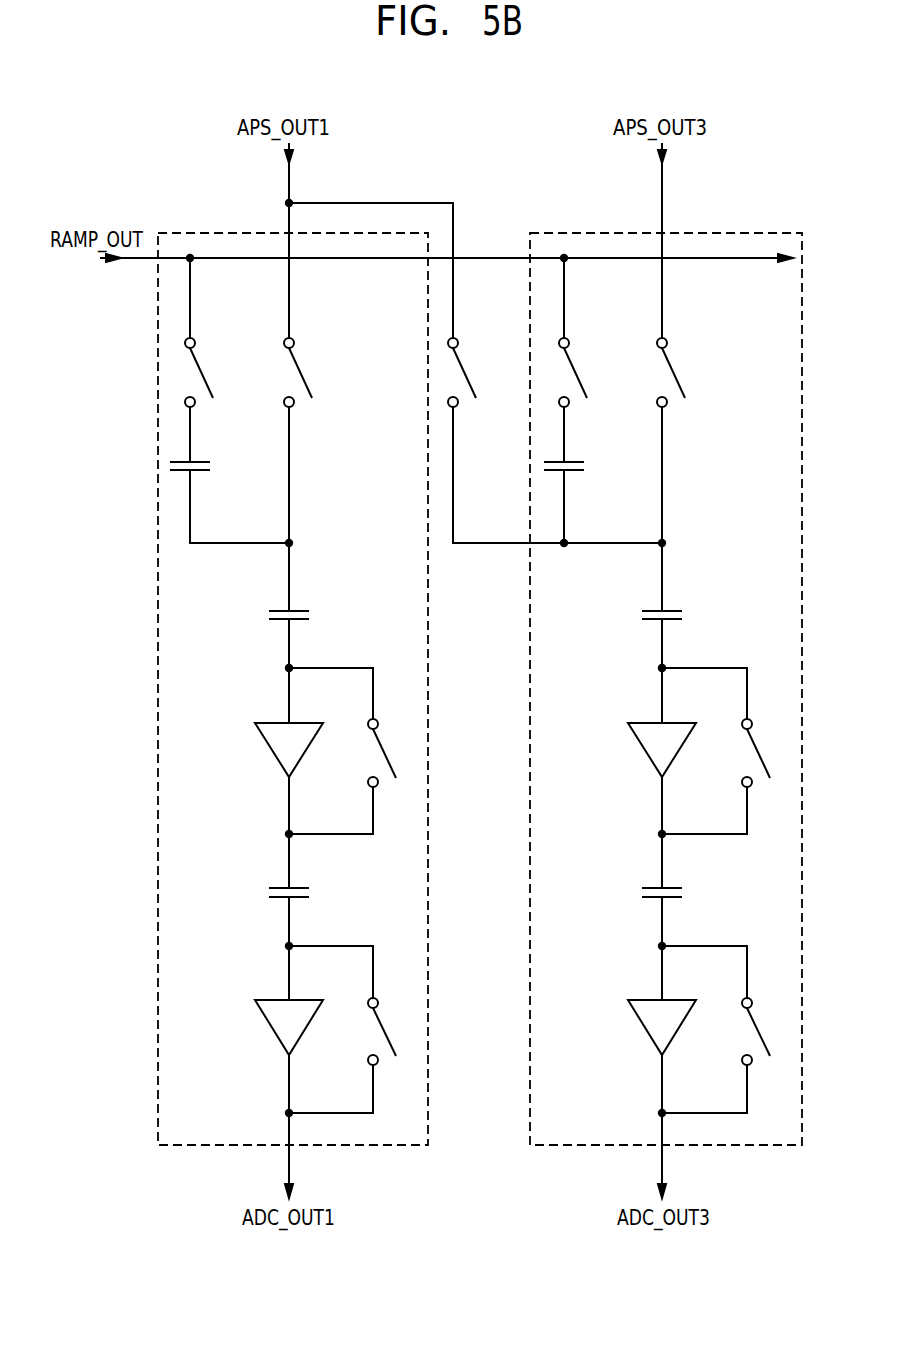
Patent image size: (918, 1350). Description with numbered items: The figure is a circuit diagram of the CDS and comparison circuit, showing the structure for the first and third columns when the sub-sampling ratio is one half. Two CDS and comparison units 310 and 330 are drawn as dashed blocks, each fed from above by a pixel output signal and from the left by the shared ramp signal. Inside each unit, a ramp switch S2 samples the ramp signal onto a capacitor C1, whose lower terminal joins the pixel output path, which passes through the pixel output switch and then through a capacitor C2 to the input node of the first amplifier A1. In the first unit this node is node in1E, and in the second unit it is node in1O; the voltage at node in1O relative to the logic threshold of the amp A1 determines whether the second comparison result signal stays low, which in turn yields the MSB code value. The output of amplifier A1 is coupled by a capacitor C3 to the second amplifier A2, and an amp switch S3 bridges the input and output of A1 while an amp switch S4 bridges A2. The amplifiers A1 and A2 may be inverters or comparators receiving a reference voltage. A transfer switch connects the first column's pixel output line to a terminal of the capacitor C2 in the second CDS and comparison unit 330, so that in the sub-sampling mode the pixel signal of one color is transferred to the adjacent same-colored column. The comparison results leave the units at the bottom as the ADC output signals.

The first CDS and comparison unit 310 is at (158, 706).
The second CDS and comparison unit 330 is at (530, 706).
The ramp switch S2 is at (398, 372).
The capacitor C1 is at (390, 466).
The capacitor C2 is at (489, 616).
The capacitor C3 is at (489, 893).
The node in1E is at (264, 670).
The node in1O is at (637, 670).
The amplifier A1 is at (467, 750).
The amplifier A2 is at (467, 1027).
The amp switch S3 is at (540, 751).
The amp switch S4 is at (540, 1029).